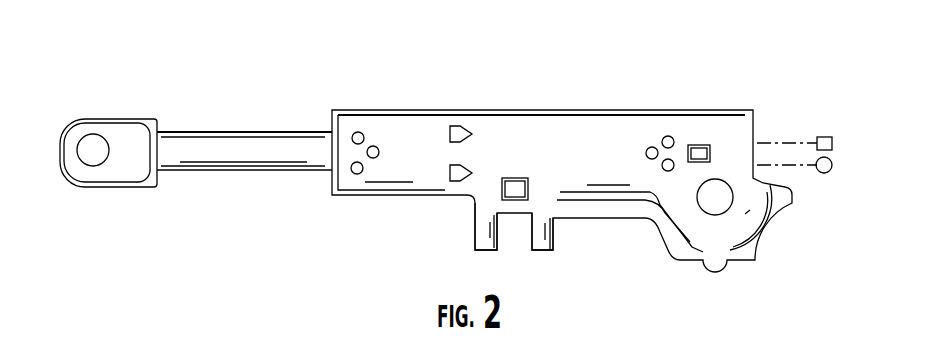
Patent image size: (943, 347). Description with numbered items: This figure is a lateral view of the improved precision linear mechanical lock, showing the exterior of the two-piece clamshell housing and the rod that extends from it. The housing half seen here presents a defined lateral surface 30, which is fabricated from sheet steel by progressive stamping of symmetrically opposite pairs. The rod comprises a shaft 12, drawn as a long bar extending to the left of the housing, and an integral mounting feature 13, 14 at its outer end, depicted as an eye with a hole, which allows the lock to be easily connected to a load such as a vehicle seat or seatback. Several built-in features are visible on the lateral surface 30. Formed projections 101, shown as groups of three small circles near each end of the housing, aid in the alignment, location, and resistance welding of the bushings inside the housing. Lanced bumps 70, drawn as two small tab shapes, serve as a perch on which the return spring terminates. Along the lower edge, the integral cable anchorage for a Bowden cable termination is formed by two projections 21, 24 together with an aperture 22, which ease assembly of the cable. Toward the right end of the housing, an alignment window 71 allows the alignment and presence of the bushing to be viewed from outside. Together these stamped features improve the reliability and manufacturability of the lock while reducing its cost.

The shaft 12 is at (222, 153).
The integral mounting feature 13 is at (124, 168).
The integral mounting feature 14 is at (93, 147).
The projection 21 is at (492, 250).
The aperture 22 is at (515, 182).
The projection 24 is at (557, 240).
The lateral surface 30 is at (556, 140).
The lanced bumps 70 is at (457, 120).
The alignment window 71 is at (703, 148).
The formed projections 101 is at (357, 162).